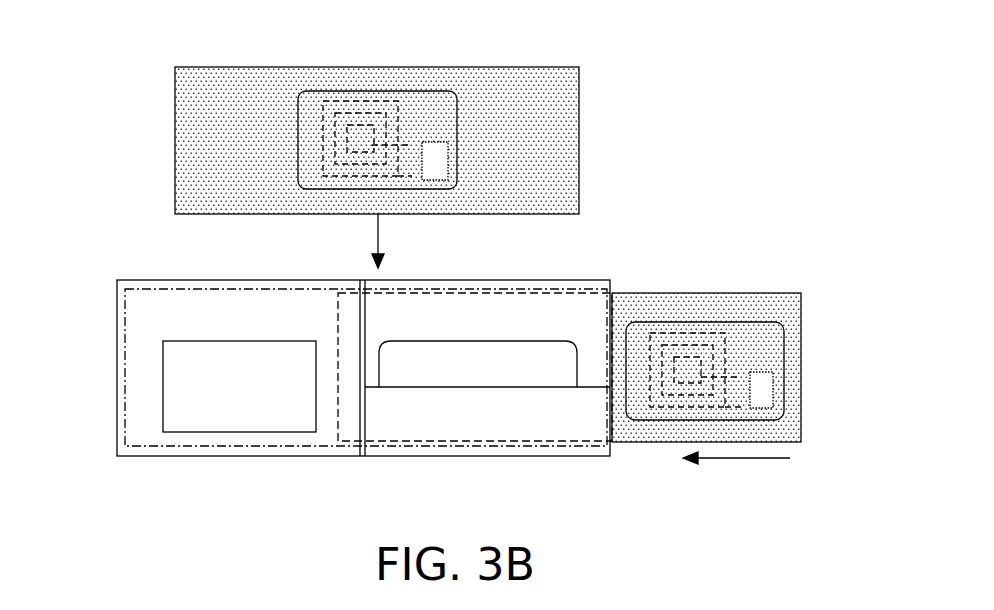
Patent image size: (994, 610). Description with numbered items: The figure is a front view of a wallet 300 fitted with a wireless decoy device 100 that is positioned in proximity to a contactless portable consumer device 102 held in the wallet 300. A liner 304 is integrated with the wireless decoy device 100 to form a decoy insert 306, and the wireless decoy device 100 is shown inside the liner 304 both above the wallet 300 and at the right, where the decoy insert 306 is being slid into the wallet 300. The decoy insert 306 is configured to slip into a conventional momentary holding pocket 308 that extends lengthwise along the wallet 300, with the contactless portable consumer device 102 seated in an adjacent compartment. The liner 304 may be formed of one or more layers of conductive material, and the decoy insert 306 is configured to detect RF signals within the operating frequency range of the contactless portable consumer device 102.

The wireless decoy device 100 is at (378, 90).
The contactless portable consumer device 102 is at (528, 346).
The wallet 300 is at (152, 280).
The liner 304 is at (233, 67).
The decoy insert 306 is at (422, 67).
The momentary holding pocket 308 is at (293, 280).